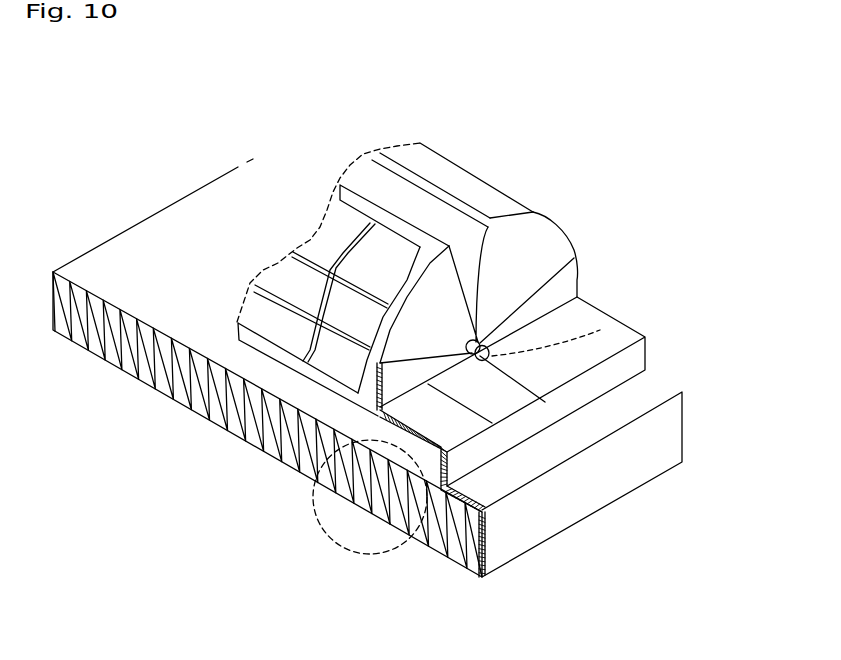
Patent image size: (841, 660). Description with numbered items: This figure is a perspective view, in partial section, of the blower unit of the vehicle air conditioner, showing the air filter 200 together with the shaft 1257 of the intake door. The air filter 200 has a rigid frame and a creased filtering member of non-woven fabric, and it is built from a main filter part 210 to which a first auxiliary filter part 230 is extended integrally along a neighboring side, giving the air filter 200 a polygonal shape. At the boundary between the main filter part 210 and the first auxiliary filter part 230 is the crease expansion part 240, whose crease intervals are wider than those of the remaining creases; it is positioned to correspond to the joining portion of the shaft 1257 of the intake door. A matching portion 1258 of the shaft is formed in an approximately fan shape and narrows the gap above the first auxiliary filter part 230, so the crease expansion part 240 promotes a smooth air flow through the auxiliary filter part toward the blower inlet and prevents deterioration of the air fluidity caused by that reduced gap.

The air filter 200 is at (172, 165).
The main filter part 210 is at (141, 350).
The first auxiliary filter part 230 is at (455, 562).
The crease expansion part 240 is at (368, 557).
The shaft of the intake door 1257 is at (540, 353).
The matching portion of the shaft of the intake door 1258 is at (523, 248).